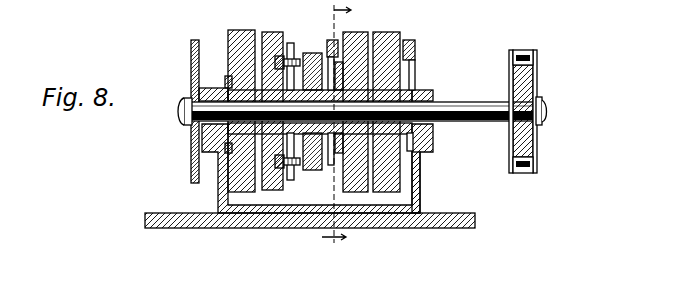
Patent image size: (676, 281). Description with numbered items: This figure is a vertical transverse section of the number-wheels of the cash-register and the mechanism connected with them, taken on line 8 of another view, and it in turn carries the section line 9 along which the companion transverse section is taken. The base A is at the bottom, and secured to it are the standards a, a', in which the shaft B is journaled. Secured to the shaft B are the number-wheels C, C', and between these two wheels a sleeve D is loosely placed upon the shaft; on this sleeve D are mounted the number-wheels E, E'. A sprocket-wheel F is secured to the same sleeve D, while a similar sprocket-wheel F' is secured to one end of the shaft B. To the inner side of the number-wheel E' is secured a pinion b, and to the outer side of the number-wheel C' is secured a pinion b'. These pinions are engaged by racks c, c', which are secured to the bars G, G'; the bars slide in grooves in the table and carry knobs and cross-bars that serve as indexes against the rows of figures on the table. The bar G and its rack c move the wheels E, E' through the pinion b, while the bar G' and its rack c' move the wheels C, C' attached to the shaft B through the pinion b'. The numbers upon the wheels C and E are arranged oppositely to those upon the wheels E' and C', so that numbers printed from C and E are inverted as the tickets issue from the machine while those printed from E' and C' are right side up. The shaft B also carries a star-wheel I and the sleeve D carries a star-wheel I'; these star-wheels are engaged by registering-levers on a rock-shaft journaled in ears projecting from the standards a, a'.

The base A is at (310, 231).
The standard a is at (316, 144).
The standard a' is at (423, 182).
The star-wheel I is at (181, 111).
The star-wheel I' is at (288, 120).
The shaft B is at (467, 102).
The number-wheel C is at (241, 118).
The number-wheel C' is at (386, 119).
The number-wheel E is at (272, 119).
The number-wheel E' is at (355, 199).
The rack c is at (353, 103).
The rack c' is at (427, 98).
The sleeve D is at (312, 123).
The sprocket-wheel F is at (292, 97).
The sprocket-wheel F' is at (533, 107).
The bar G is at (321, 86).
The bar G' is at (418, 56).
The pinion b is at (333, 130).
The pinion b' is at (434, 160).
The section line 9 is at (336, 133).
The section line 8 is at (268, 266).